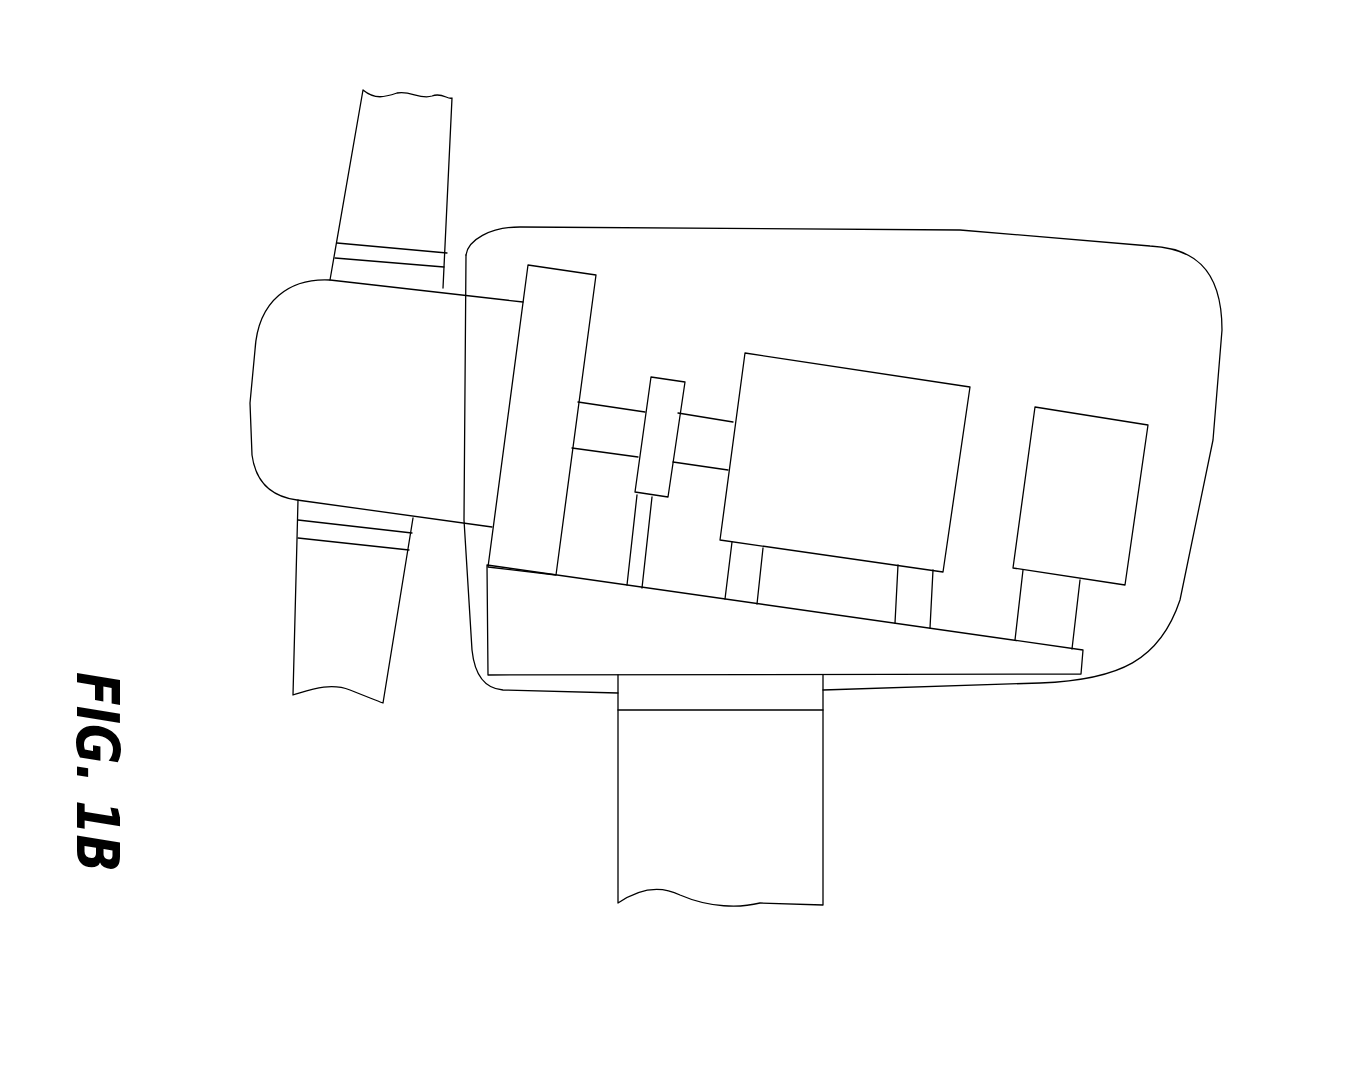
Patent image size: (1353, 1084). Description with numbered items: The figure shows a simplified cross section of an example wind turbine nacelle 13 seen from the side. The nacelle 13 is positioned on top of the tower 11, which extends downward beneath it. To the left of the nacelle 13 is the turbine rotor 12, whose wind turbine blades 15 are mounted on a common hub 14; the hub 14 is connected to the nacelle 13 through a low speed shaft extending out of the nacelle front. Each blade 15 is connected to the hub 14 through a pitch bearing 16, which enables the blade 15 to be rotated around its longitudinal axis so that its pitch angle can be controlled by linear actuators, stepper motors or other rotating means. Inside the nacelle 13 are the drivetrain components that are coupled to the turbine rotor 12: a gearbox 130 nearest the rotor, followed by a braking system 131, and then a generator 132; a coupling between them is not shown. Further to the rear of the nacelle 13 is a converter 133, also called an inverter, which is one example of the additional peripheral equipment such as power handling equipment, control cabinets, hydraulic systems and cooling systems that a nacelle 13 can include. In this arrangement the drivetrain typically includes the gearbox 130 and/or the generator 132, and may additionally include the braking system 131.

The tower 11 is at (795, 862).
The turbine rotor 12 is at (365, 404).
The wind turbine nacelle 13 is at (895, 411).
The hub 14 is at (342, 370).
The wind turbine blade 15 is at (416, 180).
The pitch bearing 16 is at (328, 532).
The gearbox 130 is at (560, 302).
The braking system 131 is at (667, 398).
The generator 132 is at (812, 410).
The converter 133 is at (1100, 460).